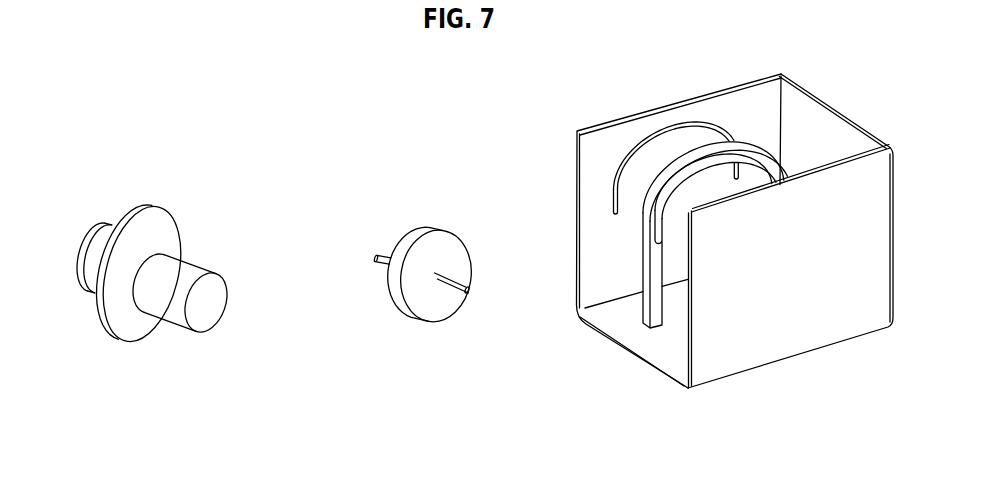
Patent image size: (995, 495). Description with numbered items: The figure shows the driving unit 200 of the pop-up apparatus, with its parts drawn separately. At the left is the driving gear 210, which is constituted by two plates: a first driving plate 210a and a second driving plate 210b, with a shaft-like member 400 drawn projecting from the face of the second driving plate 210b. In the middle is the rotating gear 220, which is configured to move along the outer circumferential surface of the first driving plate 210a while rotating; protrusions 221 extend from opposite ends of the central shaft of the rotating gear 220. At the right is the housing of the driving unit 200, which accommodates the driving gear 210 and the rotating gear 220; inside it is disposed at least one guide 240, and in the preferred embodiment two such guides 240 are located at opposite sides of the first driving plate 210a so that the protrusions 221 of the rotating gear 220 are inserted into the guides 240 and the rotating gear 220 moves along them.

The driving unit 200 is at (688, 94).
The driving gear 210 is at (108, 191).
The first driving plate 210a is at (84, 284).
The second driving plate 210b is at (118, 327).
The rotating gear 220 is at (422, 234).
The protrusions 221 is at (443, 288).
The guide 240 is at (643, 212).
The shaft 400 is at (207, 310).